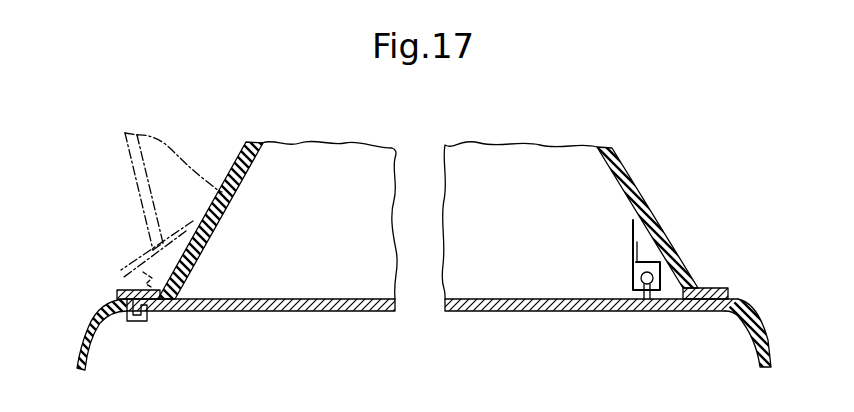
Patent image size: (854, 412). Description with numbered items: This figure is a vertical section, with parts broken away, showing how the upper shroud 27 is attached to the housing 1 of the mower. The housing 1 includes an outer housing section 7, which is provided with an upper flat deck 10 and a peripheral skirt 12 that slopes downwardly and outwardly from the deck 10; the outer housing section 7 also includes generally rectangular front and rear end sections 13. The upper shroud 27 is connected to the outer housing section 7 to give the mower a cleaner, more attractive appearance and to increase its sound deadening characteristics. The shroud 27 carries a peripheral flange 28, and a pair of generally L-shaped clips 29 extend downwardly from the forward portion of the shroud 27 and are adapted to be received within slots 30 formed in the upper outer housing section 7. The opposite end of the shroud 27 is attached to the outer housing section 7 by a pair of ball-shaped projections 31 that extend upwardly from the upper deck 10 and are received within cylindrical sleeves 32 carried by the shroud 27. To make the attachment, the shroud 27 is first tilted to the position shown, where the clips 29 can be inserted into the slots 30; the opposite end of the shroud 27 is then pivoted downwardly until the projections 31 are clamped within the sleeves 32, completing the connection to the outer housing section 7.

The housing 1 is at (741, 294).
The outer housing section 7 is at (124, 297).
The upper flat deck 10 is at (310, 298).
The peripheral skirt 12 is at (83, 330).
The front and rear end sections 13 is at (548, 298).
The upper shroud 27 is at (627, 177).
The peripheral flange 28 is at (707, 290).
The L-shaped clips 29 is at (130, 322).
The slots 30 is at (150, 309).
The ball-shaped projections 31 is at (642, 280).
The cylindrical sleeves 32 is at (633, 266).